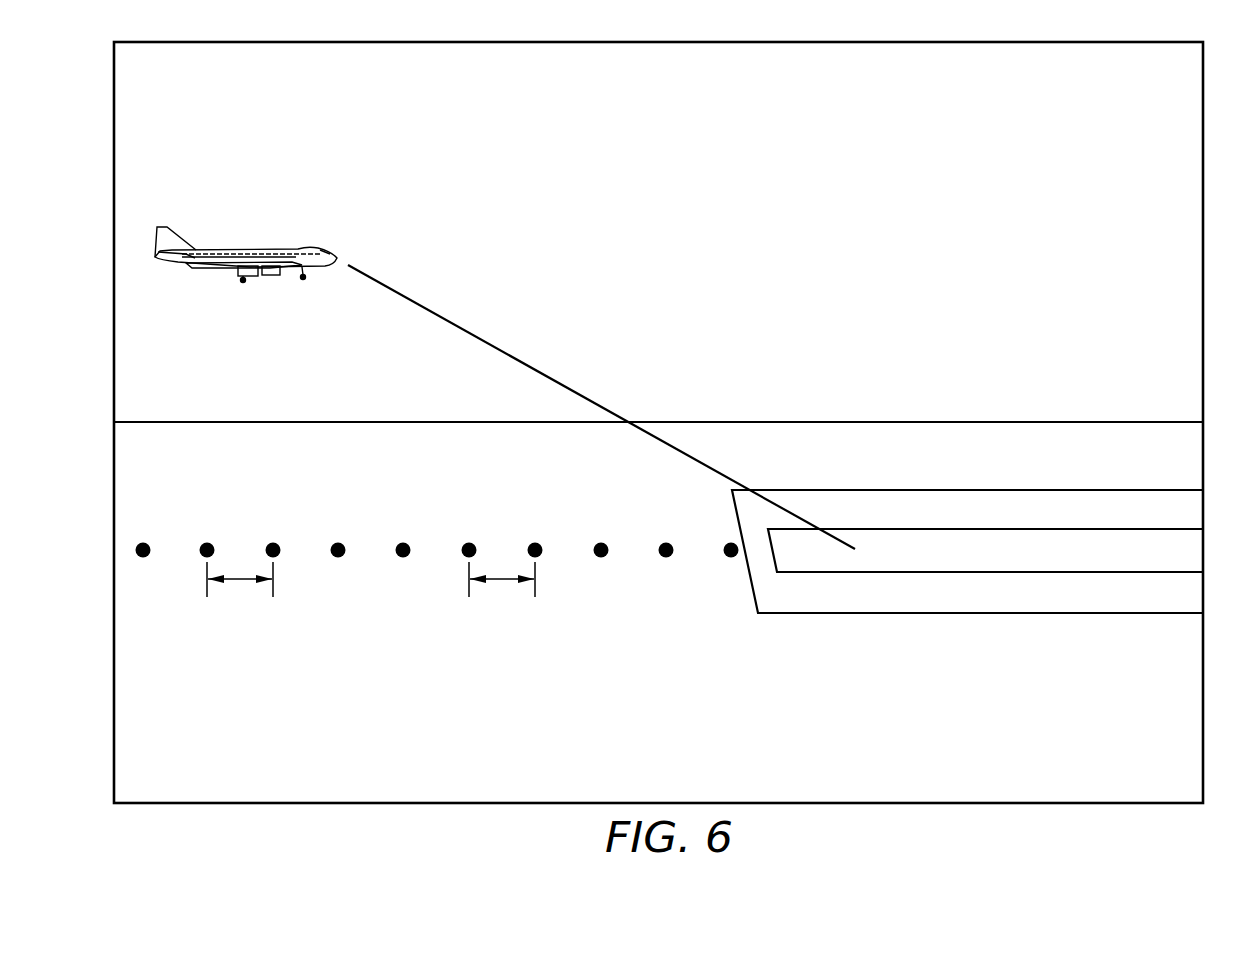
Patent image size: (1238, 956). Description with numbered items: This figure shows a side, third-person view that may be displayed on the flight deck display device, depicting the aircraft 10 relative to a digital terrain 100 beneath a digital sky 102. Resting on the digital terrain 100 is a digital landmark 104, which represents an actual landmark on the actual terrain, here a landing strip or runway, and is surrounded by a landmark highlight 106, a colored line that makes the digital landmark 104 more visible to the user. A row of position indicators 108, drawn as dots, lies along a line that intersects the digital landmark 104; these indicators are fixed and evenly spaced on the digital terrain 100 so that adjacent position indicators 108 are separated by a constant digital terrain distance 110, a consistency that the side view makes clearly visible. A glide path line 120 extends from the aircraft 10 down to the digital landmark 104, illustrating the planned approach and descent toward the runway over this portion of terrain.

The aircraft 10 is at (240, 248).
The digital terrain 100 is at (1170, 460).
The digital sky 102 is at (1170, 92).
The digital landmark 104 is at (990, 573).
The landmark highlight 106 is at (1024, 489).
The position indicators 108 is at (338, 541).
The digital terrain distance 110 is at (241, 581).
The glide path line 120 is at (514, 358).